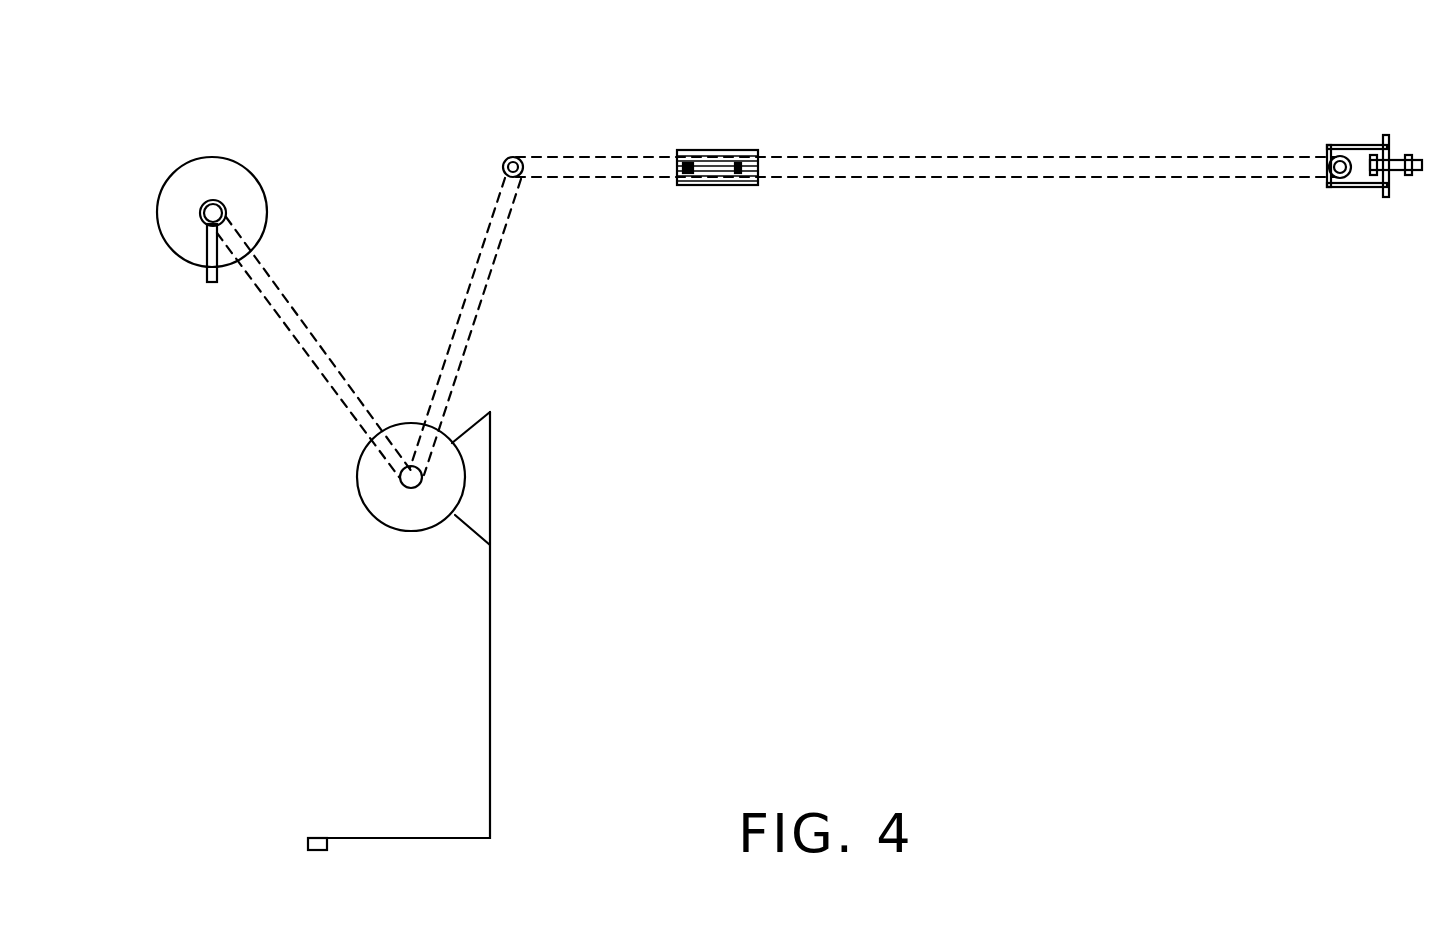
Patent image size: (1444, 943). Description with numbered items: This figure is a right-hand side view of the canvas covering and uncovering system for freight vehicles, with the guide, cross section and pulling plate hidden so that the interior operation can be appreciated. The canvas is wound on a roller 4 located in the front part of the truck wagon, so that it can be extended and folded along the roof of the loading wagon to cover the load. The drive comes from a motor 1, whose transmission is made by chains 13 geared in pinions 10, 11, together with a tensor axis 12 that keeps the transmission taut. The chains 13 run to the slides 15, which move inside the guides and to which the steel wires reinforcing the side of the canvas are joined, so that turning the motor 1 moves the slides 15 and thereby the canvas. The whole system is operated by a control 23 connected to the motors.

The motor 1 is at (358, 498).
The roller 4 is at (258, 178).
The pinion 10 is at (513, 180).
The pinion 11 is at (1330, 181).
The tensor axis 12 is at (1405, 155).
The chains 13 is at (963, 178).
The slides 15 is at (718, 186).
The control 23 is at (318, 838).